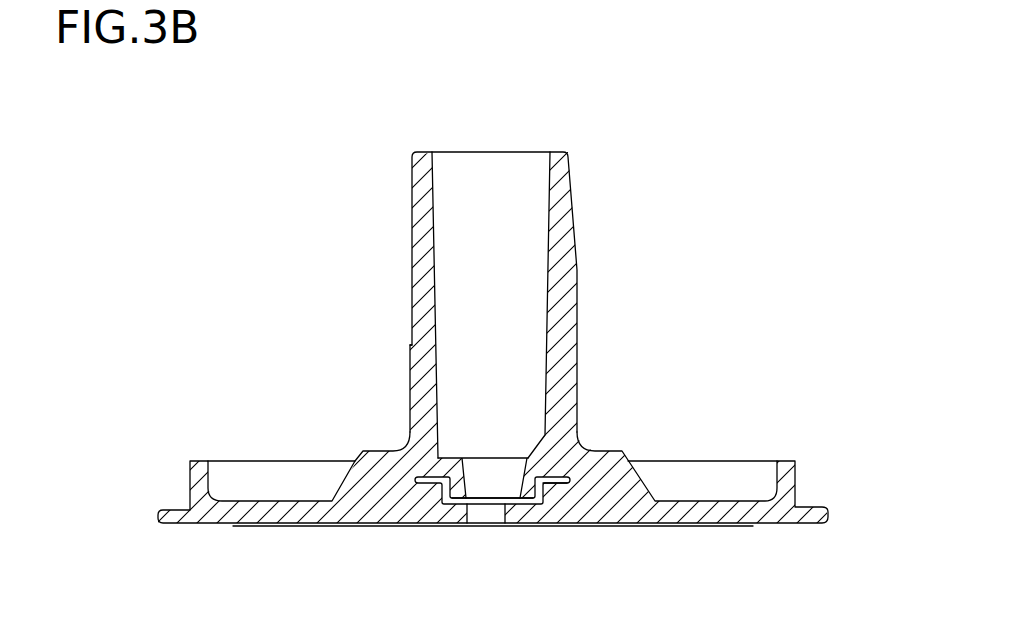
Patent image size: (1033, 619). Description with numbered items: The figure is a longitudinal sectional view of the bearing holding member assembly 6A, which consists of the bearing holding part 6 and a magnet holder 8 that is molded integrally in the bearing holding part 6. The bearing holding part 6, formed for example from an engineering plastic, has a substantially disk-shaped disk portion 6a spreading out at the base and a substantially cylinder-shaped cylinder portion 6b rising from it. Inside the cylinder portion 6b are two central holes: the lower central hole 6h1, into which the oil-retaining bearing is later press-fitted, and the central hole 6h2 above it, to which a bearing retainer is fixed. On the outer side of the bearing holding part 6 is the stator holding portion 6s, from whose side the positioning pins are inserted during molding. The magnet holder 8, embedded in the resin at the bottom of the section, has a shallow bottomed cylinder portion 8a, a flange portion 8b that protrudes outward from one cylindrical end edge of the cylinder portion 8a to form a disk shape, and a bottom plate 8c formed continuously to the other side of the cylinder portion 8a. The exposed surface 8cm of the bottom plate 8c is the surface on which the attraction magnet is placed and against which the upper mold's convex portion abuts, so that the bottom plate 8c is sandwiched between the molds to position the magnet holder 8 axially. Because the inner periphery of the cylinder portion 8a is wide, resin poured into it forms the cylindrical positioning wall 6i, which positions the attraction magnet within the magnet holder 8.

The bearing holding member assembly 6A is at (516, 334).
The bearing holding part 6 is at (404, 190).
The disk portion 6a is at (619, 514).
The cylinder portion 6b is at (608, 155).
The central hole 6h1 is at (535, 455).
The central hole 6h2 is at (535, 162).
The cylindrical positioning wall 6i is at (478, 482).
The stator holding portion 6s is at (399, 265).
The magnet holder 8 is at (481, 532).
The cylinder portion 8a is at (564, 490).
The flange portion 8b is at (632, 464).
The bottom plate 8c is at (466, 512).
The exposed surface 8cm is at (502, 505).